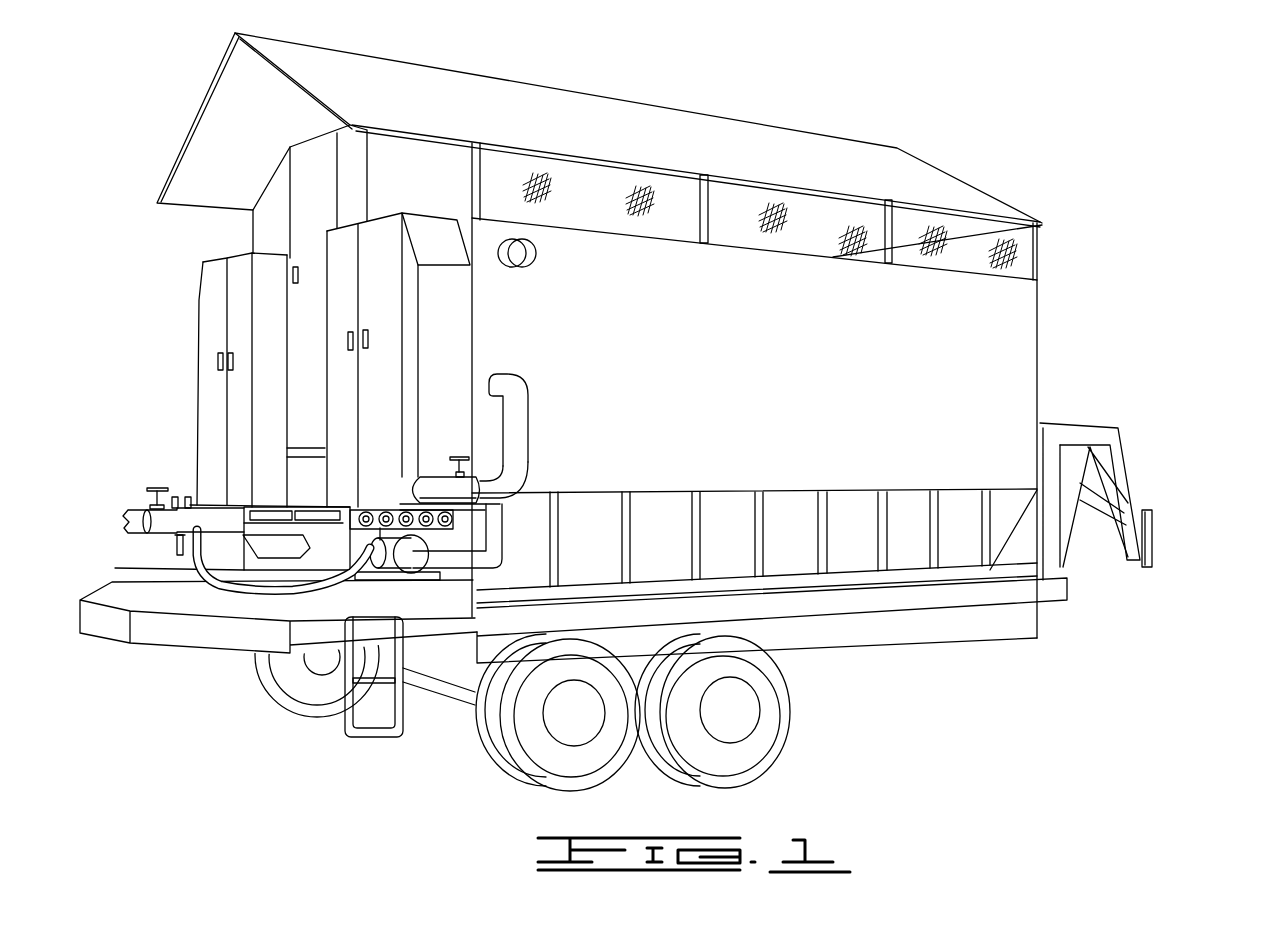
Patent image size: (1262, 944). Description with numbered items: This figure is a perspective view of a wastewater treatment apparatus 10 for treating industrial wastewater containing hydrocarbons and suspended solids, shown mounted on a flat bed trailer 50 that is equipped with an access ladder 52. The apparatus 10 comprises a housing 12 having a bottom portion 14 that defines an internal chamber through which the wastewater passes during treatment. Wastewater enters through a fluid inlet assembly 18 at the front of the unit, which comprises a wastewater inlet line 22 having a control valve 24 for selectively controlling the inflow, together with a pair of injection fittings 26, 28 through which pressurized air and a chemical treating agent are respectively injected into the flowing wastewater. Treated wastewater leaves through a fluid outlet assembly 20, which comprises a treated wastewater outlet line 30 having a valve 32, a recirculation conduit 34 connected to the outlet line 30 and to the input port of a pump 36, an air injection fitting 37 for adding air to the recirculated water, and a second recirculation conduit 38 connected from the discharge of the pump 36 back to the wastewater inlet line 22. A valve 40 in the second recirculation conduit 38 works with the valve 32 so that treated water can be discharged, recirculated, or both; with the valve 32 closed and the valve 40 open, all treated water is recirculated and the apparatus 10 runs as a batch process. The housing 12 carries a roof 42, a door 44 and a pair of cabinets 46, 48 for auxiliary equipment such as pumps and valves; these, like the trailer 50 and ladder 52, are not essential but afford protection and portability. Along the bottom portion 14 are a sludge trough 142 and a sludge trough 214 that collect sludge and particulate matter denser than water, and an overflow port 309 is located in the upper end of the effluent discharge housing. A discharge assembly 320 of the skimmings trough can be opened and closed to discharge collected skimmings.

The wastewater treatment apparatus 10 is at (1150, 169).
The housing 12 is at (1045, 355).
The bottom portion 14 is at (1012, 443).
The fluid inlet assembly 18 is at (150, 472).
The fluid outlet assembly 20 is at (540, 461).
The wastewater inlet line 22 is at (123, 515).
The control valve 24 is at (147, 489).
The injection fitting 26 is at (176, 497).
The injection fitting 28 is at (189, 497).
The treated wastewater outlet line 30 is at (522, 388).
The valve 32 is at (467, 457).
The recirculation conduit 34 is at (492, 546).
The pump 36 is at (290, 655).
The air injection fitting 37 is at (372, 567).
The second recirculation conduit 38 is at (210, 578).
The valve 40 is at (175, 542).
The roof 42 is at (829, 168).
The door 44 is at (297, 218).
The cabinet 46 is at (460, 302).
The cabinet 48 is at (215, 283).
The trailer 50 is at (960, 653).
The access ladder 52 is at (345, 727).
The sludge trough 142 is at (267, 548).
The sludge trough 214 is at (1003, 527).
The overflow port 309 is at (537, 253).
The discharge assembly 320 is at (378, 540).